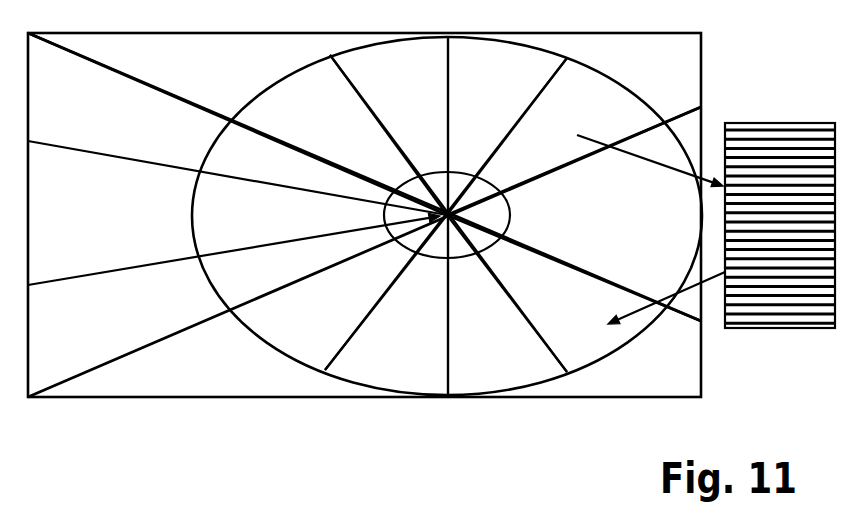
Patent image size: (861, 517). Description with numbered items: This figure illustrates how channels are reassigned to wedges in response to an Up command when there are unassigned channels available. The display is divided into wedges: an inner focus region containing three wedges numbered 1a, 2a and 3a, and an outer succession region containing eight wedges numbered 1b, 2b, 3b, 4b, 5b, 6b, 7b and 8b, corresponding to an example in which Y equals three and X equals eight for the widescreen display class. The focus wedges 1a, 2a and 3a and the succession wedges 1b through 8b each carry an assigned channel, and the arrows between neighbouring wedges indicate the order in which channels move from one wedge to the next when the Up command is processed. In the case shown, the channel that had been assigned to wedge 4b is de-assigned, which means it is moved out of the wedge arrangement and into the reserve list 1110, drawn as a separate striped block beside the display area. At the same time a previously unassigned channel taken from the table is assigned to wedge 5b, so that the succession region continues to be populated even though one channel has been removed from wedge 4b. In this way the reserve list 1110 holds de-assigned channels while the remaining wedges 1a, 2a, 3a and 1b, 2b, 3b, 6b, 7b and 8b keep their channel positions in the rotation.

The wedge 1a is at (281, 233).
The wedge 2a is at (286, 183).
The wedge 3a is at (310, 142).
The wedge 1b is at (388, 112).
The wedge 2b is at (459, 107).
The wedge 3b is at (524, 127).
The wedge 4b is at (585, 161).
The wedge 5b is at (528, 332).
The wedge 6b is at (441, 355).
The wedge 7b is at (356, 313).
The wedge 8b is at (301, 270).
The reserve list 1110 is at (765, 123).